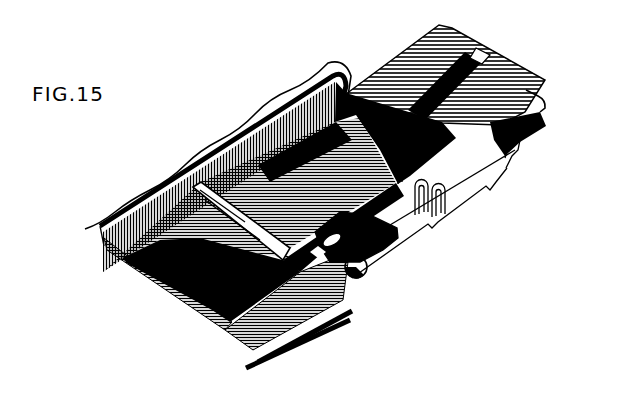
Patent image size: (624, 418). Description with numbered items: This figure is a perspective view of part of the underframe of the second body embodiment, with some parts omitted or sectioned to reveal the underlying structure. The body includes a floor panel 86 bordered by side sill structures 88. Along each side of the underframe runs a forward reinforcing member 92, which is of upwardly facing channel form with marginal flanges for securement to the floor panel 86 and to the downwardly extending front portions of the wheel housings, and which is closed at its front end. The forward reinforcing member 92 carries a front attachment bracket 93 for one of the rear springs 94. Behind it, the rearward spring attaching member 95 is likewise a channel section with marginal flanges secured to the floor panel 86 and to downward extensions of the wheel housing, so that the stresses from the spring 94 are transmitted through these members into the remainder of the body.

The floor panel 86 is at (207, 316).
The side sill structures 88 is at (250, 353).
The forward reinforcing member 92 is at (385, 233).
The front attachment bracket 93 is at (364, 276).
The spring 94 is at (470, 193).
The rearward spring attaching member 95 is at (545, 108).